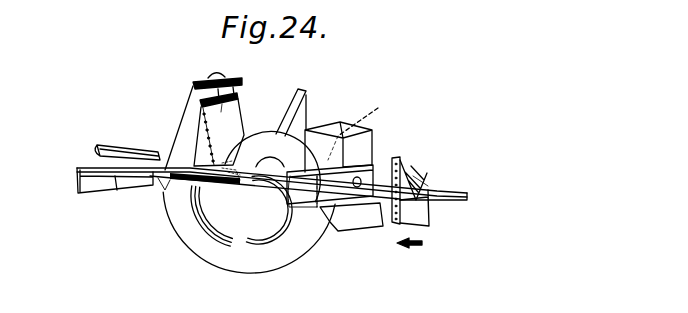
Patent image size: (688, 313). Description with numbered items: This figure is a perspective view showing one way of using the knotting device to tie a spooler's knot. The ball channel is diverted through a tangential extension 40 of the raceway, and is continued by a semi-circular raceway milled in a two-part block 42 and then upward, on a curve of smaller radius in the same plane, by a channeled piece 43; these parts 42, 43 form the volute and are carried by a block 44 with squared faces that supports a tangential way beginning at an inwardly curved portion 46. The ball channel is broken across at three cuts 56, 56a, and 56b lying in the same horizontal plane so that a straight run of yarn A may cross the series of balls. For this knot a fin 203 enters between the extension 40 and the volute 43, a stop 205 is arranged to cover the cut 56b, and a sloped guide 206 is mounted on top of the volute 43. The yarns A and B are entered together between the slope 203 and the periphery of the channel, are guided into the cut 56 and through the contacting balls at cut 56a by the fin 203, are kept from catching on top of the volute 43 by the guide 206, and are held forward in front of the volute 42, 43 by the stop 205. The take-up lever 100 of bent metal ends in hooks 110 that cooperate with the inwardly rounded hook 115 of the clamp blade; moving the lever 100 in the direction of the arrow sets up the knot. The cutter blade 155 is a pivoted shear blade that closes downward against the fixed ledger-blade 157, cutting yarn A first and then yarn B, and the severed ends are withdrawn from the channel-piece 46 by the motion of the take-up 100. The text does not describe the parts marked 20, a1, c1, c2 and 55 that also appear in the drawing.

The arm 20 is at (217, 70).
The tangential extension 40 is at (186, 92).
The fin 203 is at (234, 109).
The sloped guide 206 is at (307, 96).
The channeled piece 43 is at (261, 135).
The cut 56b is at (411, 100).
The two-part block 42 is at (265, 263).
The inwardly curved portion 46 is at (243, 213).
The stop 205 is at (306, 210).
The block 44 is at (362, 222).
The yarn A is at (455, 192).
The hooks 110 is at (416, 178).
The inwardly rounded hook 115 is at (428, 176).
The lever 100 is at (431, 217).
The yarn B is at (455, 208).
The cutter blade 155 is at (119, 137).
The lever end a1 is at (88, 150).
The link end c1 is at (157, 152).
The link end c2 is at (120, 186).
The cut 56 is at (170, 187).
The bar 55 is at (173, 180).
The cut 56a is at (232, 188).
The ledger-blade 157 is at (90, 186).